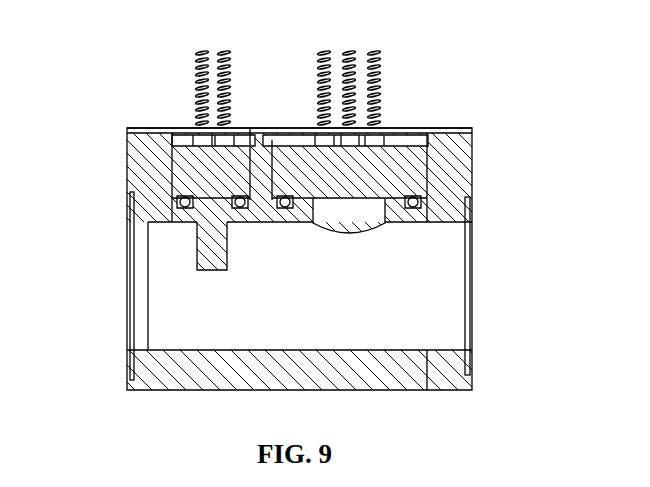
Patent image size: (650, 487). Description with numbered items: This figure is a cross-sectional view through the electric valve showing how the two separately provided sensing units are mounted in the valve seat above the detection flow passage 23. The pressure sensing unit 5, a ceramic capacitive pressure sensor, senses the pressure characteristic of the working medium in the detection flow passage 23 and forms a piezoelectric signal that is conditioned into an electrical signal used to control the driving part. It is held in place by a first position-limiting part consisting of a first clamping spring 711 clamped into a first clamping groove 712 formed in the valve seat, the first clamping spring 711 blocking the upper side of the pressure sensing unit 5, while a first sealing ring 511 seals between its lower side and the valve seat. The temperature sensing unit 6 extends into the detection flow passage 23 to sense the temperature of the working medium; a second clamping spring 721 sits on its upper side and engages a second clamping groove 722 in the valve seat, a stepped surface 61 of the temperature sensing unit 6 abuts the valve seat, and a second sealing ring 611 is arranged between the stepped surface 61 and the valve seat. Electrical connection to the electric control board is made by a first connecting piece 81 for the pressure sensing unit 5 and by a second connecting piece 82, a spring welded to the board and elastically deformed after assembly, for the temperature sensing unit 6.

The detection flow passage 23 is at (327, 293).
The pressure sensing unit 5 is at (395, 182).
The first sealing ring 511 is at (440, 210).
The temperature sensing unit 6 is at (195, 165).
The stepped surface 61 is at (178, 203).
The second sealing ring 611 is at (183, 197).
The first clamping spring 711 is at (430, 137).
The first clamping groove 712 is at (472, 129).
The second clamping spring 721 is at (178, 137).
The second clamping groove 722 is at (128, 129).
The first connecting piece 81 is at (382, 90).
The second connecting piece 82 is at (195, 88).